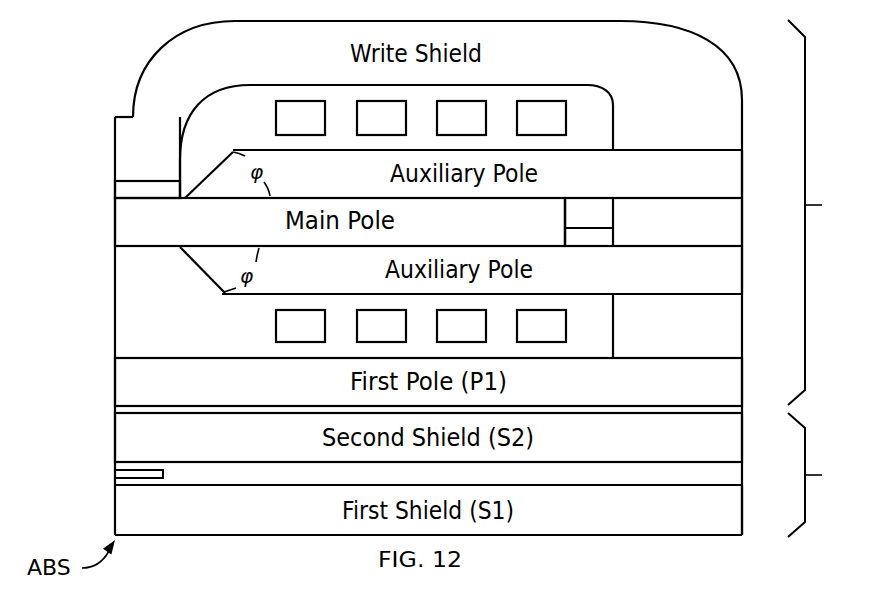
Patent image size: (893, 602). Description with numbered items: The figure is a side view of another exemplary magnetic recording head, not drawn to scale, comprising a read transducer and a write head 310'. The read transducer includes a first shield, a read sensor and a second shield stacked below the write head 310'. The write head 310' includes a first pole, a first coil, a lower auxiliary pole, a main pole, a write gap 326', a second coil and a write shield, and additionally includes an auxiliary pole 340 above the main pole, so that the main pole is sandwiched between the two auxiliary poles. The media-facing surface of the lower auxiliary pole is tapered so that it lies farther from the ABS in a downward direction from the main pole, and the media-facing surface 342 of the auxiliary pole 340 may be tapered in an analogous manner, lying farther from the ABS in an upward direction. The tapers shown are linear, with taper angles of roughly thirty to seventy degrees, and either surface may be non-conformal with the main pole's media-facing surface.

The write head 310' is at (826, 212).
The write gap 326' is at (104, 168).
The additional auxiliary pole 340 is at (742, 165).
The media-facing surface 342 is at (205, 152).